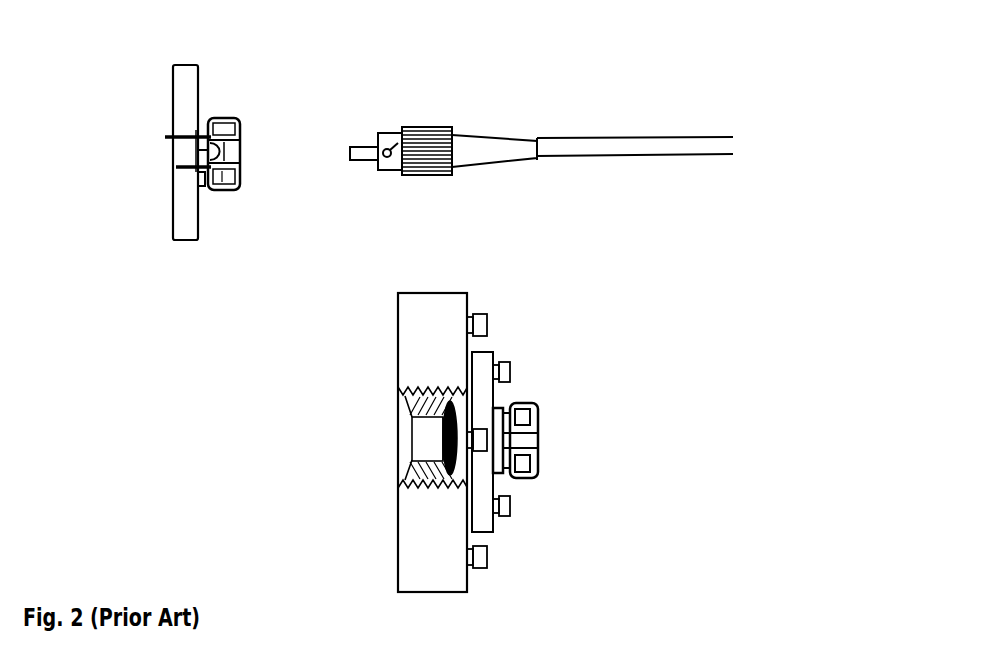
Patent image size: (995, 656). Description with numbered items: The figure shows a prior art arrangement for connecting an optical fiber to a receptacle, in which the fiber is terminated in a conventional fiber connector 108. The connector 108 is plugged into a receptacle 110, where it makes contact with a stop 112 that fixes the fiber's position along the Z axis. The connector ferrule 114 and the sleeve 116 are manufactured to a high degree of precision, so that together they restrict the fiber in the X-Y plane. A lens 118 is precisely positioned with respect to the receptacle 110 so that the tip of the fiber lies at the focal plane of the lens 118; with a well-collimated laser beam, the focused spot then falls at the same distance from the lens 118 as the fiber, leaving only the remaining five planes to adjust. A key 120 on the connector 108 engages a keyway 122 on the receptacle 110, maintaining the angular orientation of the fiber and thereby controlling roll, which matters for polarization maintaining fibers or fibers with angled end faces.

The connector 108 is at (541, 120).
The receptacle 110 is at (206, 185).
The stop 112 is at (177, 137).
The connector ferrule 114 is at (362, 168).
The sleeve 116 is at (190, 127).
The lens 118 is at (445, 403).
The key 120 is at (427, 137).
The keyway 122 is at (245, 150).